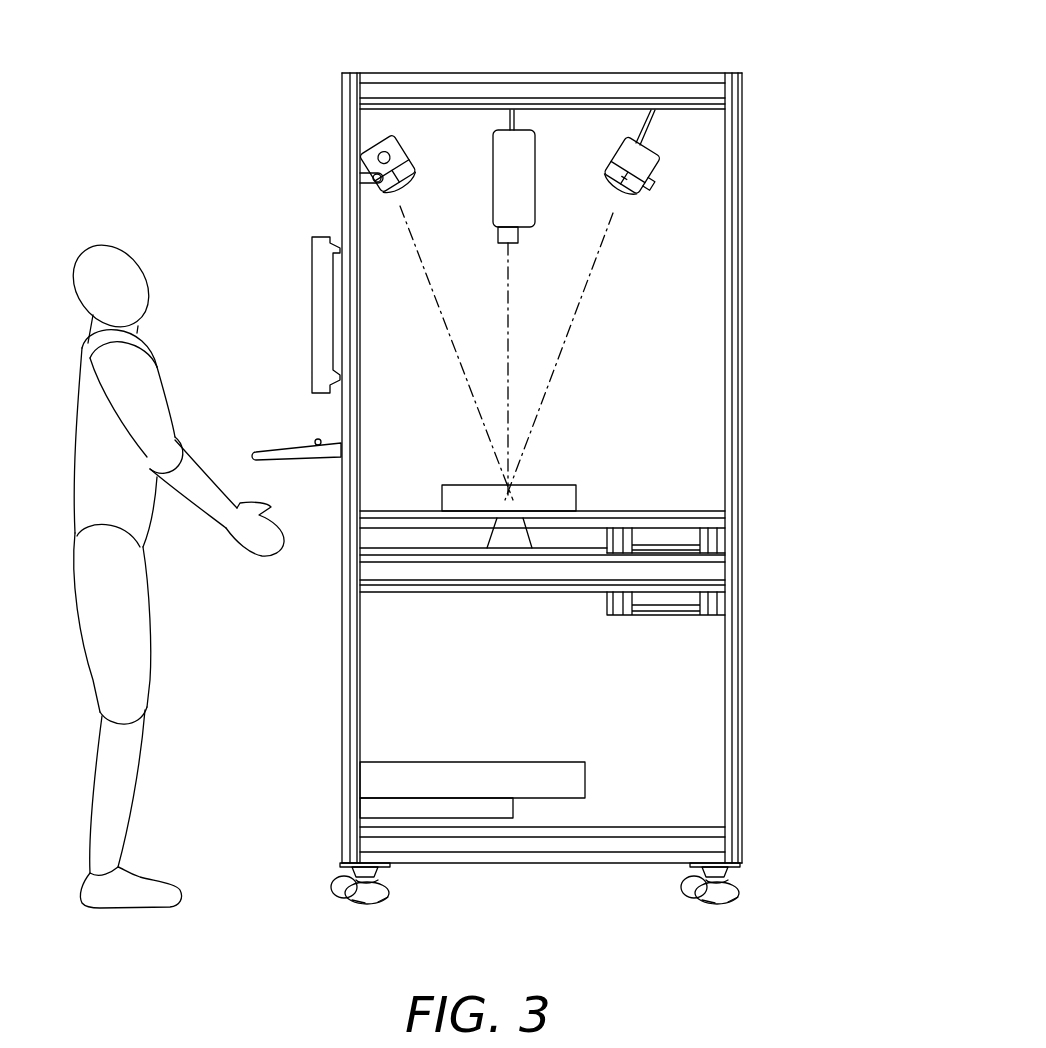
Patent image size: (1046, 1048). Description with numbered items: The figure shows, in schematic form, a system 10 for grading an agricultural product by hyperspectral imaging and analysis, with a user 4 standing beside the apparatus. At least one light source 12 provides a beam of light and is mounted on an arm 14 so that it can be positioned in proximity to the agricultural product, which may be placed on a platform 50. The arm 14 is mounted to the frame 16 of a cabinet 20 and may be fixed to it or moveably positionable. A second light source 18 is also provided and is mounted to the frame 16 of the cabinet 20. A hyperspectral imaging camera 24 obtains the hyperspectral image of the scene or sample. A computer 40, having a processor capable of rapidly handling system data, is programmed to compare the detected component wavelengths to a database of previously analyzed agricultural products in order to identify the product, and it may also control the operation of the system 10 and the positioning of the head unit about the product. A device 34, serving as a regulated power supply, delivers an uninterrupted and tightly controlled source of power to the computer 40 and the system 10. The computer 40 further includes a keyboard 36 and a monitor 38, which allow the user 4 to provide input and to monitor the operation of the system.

The operator 4 is at (86, 246).
The system 10 is at (803, 67).
The light source 12 is at (655, 160).
The arm 14 is at (636, 121).
The frame 16 is at (743, 143).
The second light source 18 is at (409, 153).
The cabinet 20 is at (730, 228).
The hyperspectral imaging camera 24 is at (535, 206).
The regulated power supply 34 is at (560, 761).
The keyboard 36 is at (304, 461).
The monitor 38 is at (311, 262).
The computer 40 is at (513, 809).
The platform 50 is at (555, 486).